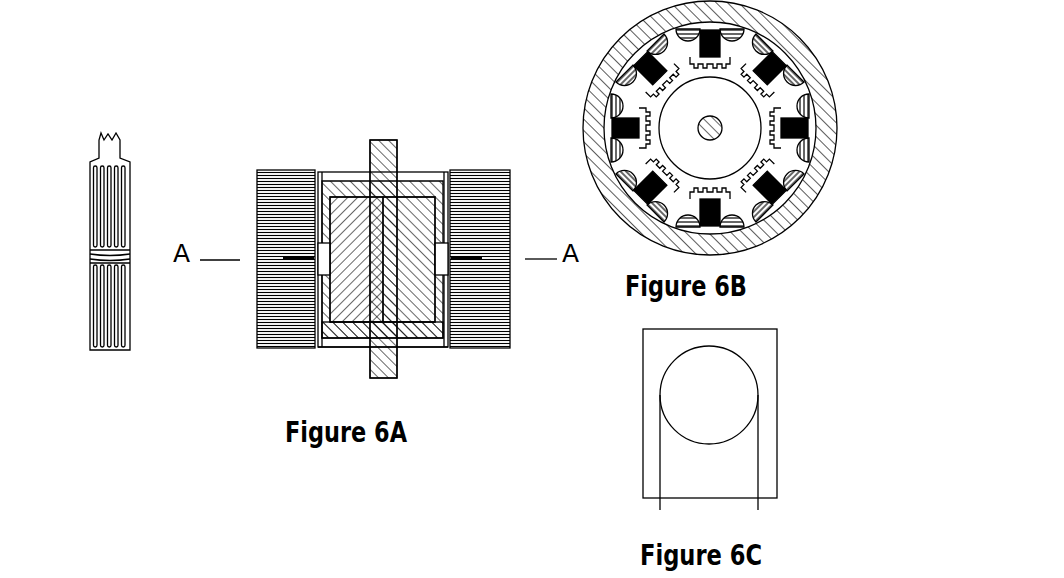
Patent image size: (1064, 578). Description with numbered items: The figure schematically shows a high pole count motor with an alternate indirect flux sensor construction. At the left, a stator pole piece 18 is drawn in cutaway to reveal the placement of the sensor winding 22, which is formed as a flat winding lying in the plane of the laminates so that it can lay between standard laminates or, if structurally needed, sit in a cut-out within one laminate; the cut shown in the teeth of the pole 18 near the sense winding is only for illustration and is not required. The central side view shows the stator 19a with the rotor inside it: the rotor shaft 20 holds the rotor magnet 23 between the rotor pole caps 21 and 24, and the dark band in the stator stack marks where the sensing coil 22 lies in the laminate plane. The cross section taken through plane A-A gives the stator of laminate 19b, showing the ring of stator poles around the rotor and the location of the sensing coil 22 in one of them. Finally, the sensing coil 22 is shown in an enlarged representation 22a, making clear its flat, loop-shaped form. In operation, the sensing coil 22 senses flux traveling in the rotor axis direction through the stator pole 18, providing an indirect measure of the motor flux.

In FIG. 6A, the stator pole piece 18 is at (130, 160).
In FIG. 6A, the stator 19a is at (283, 168).
In FIG. 6B, the stator of laminate 19b is at (600, 60).
In FIG. 6A, the rotor shaft 20 is at (397, 138).
In FIG. 6A, the rotor pole cap 21 is at (428, 180).
In FIG. 6A, the sensor winding 22 is at (82, 253).
In FIG. 6B, the sensor winding 22 is at (783, 208).
In FIG. 6C, the enlarged representation of sensing coil 22a is at (760, 387).
In FIG. 6A, the rotor magnet 23 is at (420, 263).
In FIG. 6A, the rotor pole cap 24 is at (433, 337).